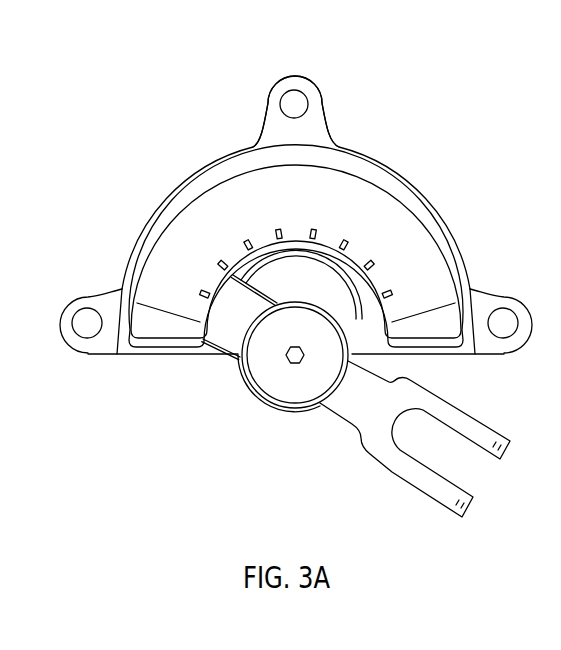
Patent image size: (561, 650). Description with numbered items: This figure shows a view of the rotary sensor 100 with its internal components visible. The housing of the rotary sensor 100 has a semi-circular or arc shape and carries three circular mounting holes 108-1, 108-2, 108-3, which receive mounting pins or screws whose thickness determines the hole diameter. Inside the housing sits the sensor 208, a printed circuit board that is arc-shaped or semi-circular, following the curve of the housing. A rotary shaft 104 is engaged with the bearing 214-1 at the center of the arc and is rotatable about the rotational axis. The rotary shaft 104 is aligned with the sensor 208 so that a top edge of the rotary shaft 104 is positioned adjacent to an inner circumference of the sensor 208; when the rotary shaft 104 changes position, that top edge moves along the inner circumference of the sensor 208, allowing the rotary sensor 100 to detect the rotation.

The rotary sensor 100 is at (163, 146).
The rotary shaft 104 is at (390, 472).
The mounting hole 108-1 is at (84, 318).
The mounting hole 108-2 is at (293, 98).
The mounting hole 108-3 is at (503, 318).
The sensor 208 is at (180, 250).
The bearing 214-1 is at (284, 382).